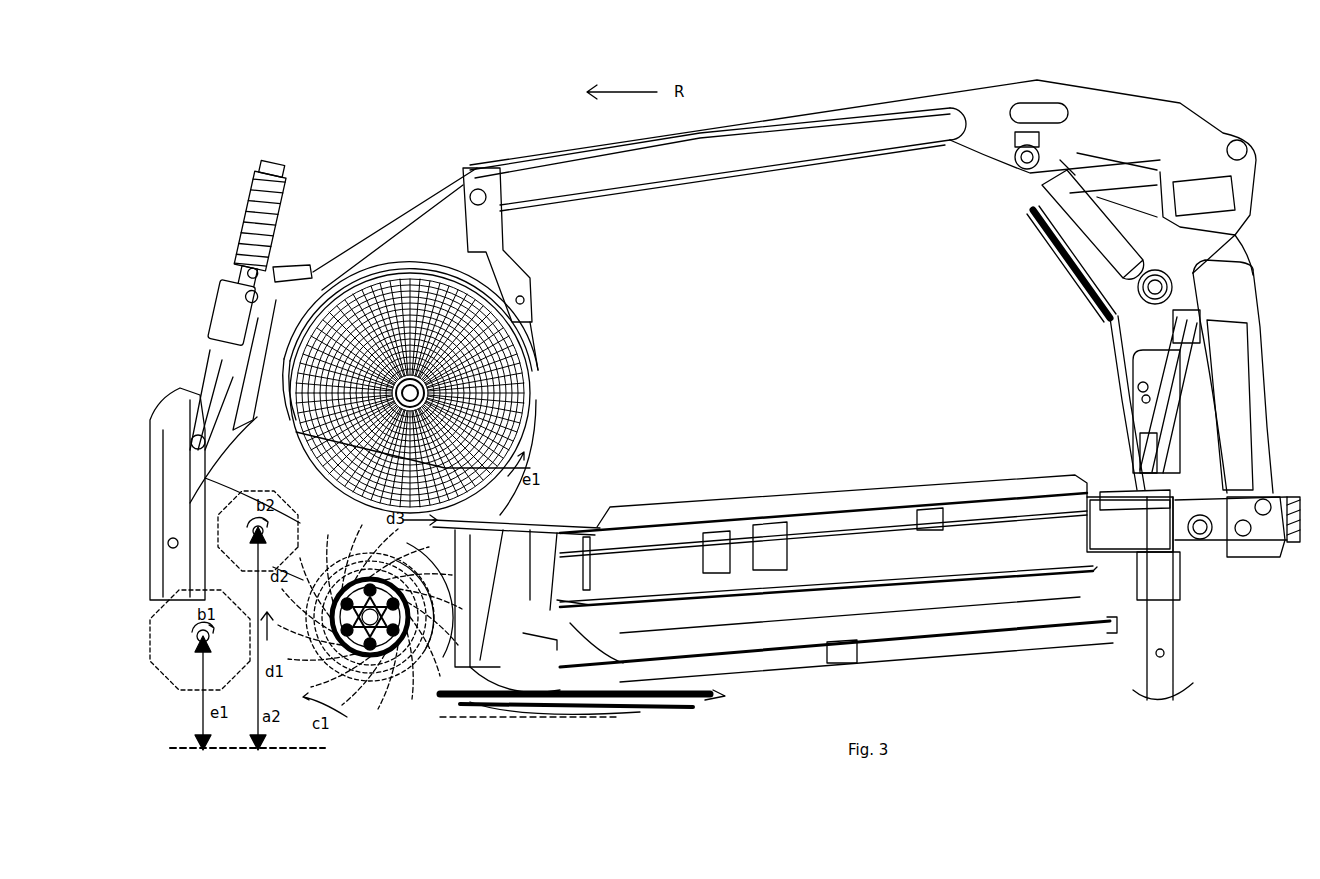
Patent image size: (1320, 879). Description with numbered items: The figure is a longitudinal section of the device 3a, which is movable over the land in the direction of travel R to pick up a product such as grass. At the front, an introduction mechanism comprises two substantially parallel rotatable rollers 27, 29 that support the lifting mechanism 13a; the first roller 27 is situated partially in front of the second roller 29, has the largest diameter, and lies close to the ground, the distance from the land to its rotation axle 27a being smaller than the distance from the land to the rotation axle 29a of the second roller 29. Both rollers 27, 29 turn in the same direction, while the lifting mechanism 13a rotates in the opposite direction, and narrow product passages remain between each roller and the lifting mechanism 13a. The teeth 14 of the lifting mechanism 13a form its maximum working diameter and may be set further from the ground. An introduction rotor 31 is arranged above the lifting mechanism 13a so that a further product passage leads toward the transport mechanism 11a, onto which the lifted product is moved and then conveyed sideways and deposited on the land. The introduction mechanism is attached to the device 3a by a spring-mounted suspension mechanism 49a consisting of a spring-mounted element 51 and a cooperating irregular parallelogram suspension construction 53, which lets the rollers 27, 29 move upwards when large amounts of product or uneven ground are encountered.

The device 3a is at (427, 145).
The spring-mounted element 51 is at (243, 223).
The spring-mounted suspension mechanism 49a is at (207, 252).
The parallelogram suspension construction 53 is at (185, 388).
The introduction rotor 31 is at (540, 440).
The second roller 29 is at (277, 517).
The rotation axle of second roller 29a is at (247, 535).
The first roller 27 is at (183, 675).
The rotation axle of first roller 27a is at (201, 634).
The teeth 14 is at (372, 700).
The lifting mechanism 13a is at (397, 693).
The transport mechanism 11a is at (812, 493).